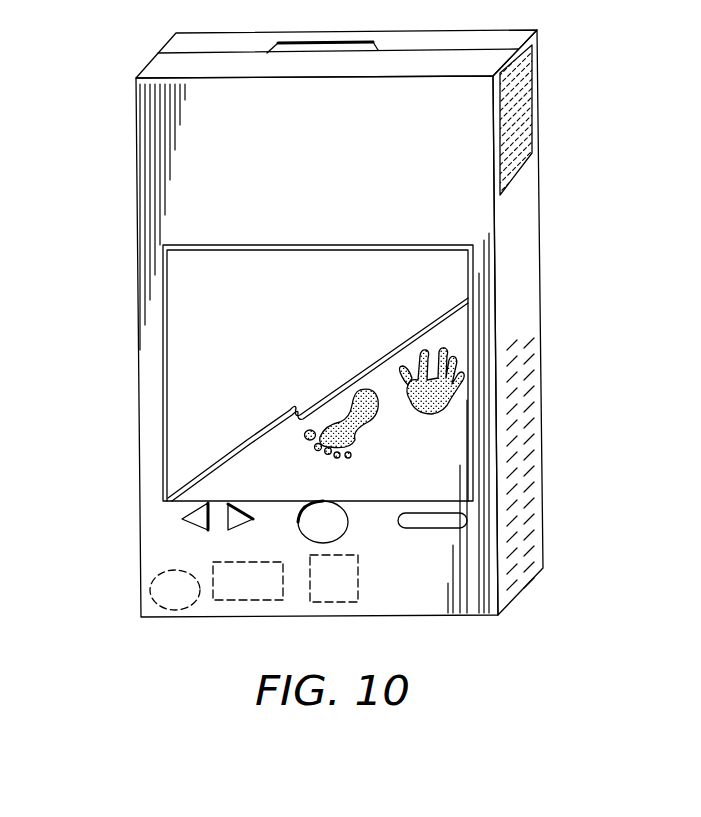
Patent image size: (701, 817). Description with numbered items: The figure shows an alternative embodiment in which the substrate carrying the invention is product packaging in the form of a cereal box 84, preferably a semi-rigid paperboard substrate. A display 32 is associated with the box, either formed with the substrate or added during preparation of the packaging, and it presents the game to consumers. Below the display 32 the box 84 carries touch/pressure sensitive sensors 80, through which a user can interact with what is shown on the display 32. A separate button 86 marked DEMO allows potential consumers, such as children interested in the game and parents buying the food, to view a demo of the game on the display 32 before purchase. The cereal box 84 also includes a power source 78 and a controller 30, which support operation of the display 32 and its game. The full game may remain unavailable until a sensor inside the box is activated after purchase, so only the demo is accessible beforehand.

The cereal box 84 is at (100, 590).
The display 32 is at (457, 285).
The touch/pressure sensitive sensors 80 is at (237, 519).
The button (DEMO) 86 is at (467, 519).
The power source 78 is at (178, 606).
The controller 30 is at (250, 600).